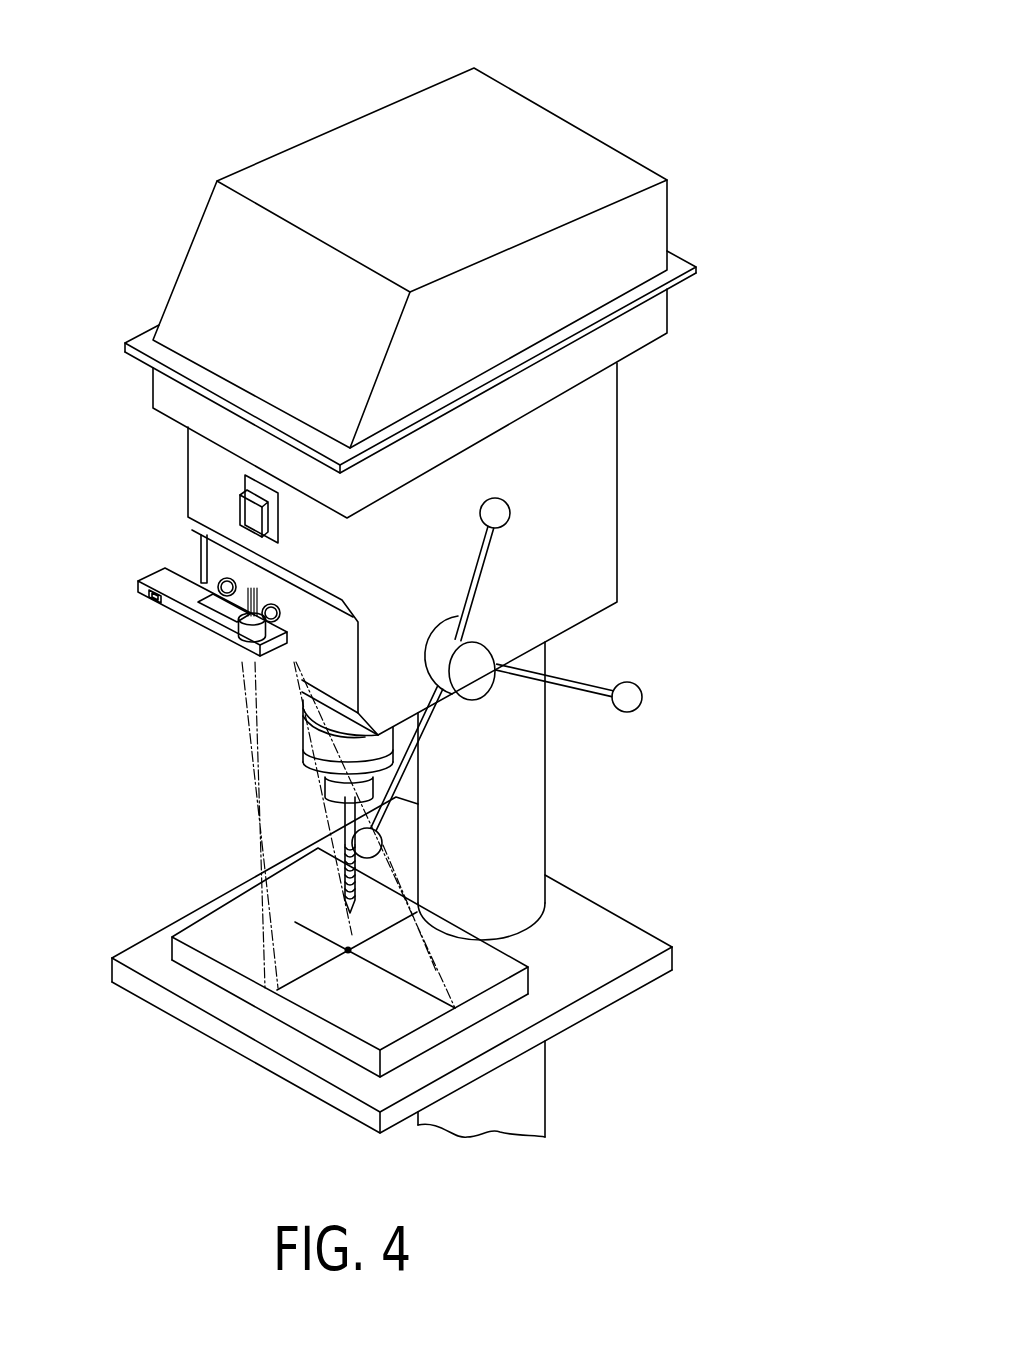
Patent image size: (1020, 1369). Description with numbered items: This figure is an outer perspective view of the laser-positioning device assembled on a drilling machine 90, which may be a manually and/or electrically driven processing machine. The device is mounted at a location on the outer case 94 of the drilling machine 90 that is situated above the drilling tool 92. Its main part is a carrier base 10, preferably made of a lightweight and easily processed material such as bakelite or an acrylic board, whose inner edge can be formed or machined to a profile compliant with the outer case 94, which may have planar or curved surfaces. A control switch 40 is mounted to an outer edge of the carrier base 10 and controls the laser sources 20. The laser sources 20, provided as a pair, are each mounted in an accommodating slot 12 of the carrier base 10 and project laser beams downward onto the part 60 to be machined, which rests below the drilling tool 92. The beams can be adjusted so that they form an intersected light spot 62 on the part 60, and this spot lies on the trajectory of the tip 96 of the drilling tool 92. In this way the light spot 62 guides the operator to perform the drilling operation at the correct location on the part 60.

The drilling machine 90 is at (400, 576).
The drilling tool 92 is at (325, 831).
The outer case 94 is at (215, 567).
The tip 96 is at (347, 912).
The part to be machined 60 is at (483, 1010).
The intersected light spot 62 is at (348, 950).
The carrier base 10 is at (137, 580).
The accommodating slot 12 is at (210, 603).
The laser source 20 is at (242, 658).
The control switch 40 is at (150, 597).